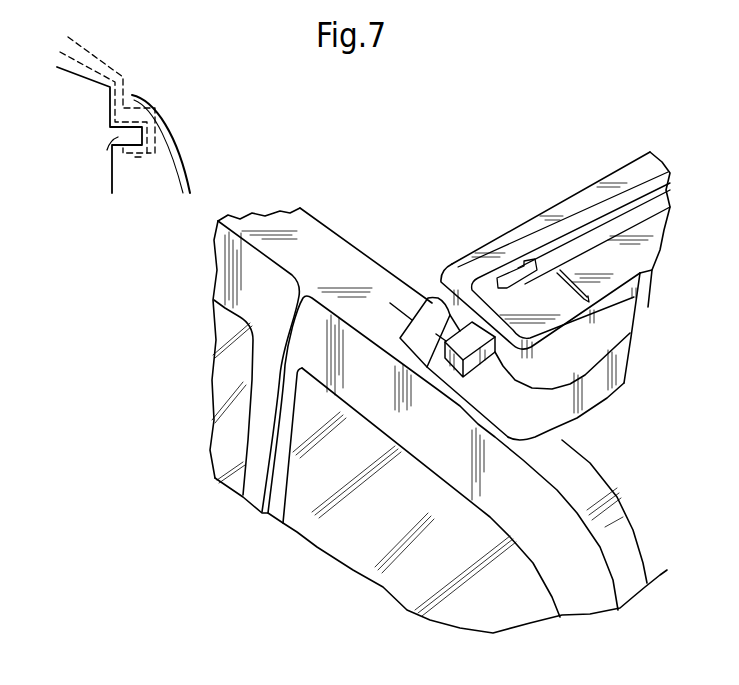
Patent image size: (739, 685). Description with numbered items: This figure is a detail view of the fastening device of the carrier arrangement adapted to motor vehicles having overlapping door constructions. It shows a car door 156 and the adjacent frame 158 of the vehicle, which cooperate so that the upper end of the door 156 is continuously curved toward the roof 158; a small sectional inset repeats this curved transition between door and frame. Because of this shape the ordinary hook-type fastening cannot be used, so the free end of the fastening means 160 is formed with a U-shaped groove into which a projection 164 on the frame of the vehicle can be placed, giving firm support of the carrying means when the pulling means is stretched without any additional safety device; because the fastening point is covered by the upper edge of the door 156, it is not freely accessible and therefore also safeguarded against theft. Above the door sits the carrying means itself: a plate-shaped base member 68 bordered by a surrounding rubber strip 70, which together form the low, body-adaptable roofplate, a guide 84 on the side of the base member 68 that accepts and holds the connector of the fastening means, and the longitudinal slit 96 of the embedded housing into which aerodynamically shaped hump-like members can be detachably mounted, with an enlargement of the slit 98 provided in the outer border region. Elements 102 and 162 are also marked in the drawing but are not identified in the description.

The plate-shaped base member 68 is at (650, 298).
The rubber strip 70 is at (587, 403).
The guide 84 is at (433, 301).
The longitudinal slit 96 is at (559, 243).
The enlargement of the slit 98 is at (512, 272).
The pin 102 is at (592, 300).
The car door 156 is at (173, 148).
The frame 158 is at (62, 70).
The fastening means 160 is at (99, 61).
The seal lip 162 is at (138, 157).
The projection 164 is at (102, 154).